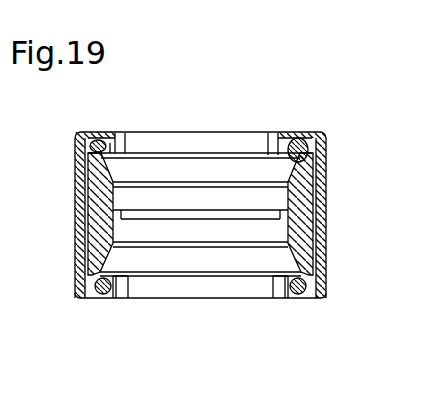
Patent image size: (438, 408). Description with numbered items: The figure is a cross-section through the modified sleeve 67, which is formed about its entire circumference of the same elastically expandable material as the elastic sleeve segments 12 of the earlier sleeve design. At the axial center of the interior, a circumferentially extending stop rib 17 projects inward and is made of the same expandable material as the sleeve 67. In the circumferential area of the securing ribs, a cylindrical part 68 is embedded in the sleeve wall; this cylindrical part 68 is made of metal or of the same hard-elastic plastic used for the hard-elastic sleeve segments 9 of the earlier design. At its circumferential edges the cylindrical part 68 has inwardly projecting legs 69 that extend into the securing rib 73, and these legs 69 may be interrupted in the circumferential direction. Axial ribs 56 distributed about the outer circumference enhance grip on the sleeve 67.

The hard-elastic sleeve segments 9 is at (80, 189).
The elastic sleeve segments 12 is at (240, 299).
The stop rib 17 is at (163, 219).
The axial ribs 56 is at (75, 147).
The sleeve 67 is at (326, 264).
The cylindrical part 68 is at (88, 233).
The inwardly projecting legs 69 is at (103, 296).
The securing rib 73 is at (119, 292).